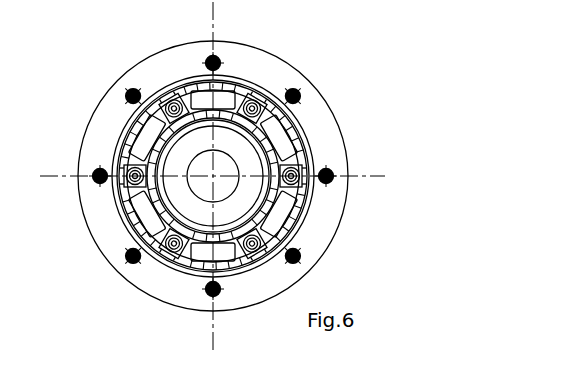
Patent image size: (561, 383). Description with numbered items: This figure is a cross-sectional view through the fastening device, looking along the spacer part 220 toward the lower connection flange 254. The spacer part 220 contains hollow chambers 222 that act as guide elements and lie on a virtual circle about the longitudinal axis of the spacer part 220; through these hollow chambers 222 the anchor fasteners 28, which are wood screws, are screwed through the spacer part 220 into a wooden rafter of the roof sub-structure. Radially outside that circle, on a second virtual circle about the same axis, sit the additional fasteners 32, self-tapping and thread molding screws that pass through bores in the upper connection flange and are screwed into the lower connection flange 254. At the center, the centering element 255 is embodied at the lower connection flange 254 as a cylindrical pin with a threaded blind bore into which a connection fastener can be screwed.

The anchor fasteners 28 is at (260, 176).
The additional fasteners 32 is at (240, 170).
The spacer part 220 is at (188, 205).
The hollow chambers 222 is at (221, 137).
The lower connection flange 254 is at (255, 176).
The centering element 255 is at (293, 176).